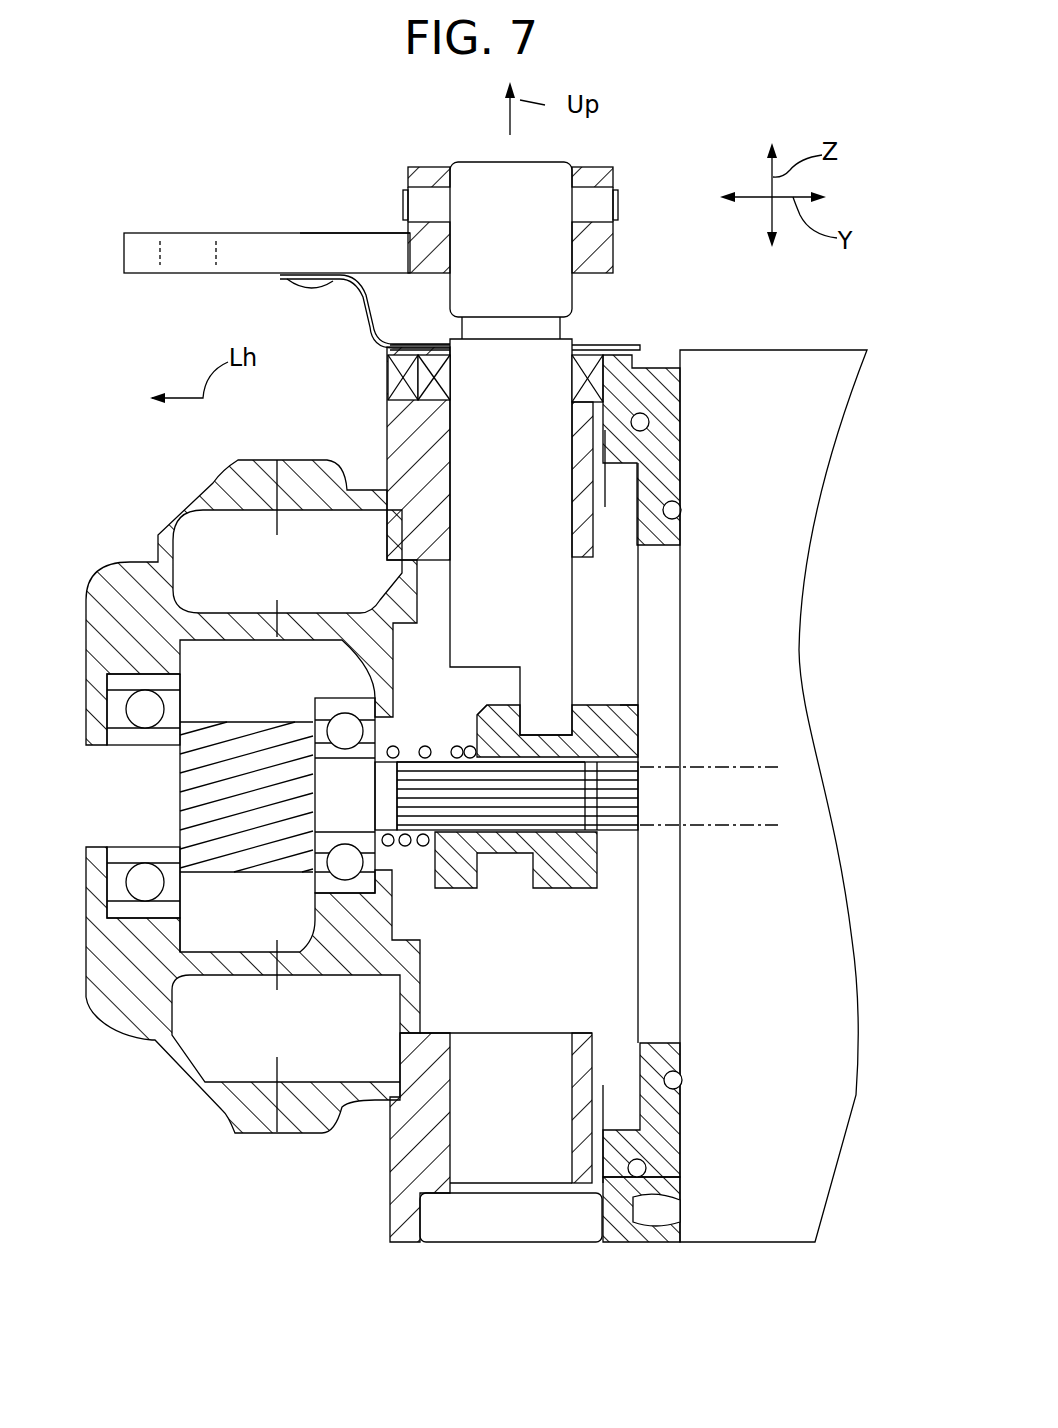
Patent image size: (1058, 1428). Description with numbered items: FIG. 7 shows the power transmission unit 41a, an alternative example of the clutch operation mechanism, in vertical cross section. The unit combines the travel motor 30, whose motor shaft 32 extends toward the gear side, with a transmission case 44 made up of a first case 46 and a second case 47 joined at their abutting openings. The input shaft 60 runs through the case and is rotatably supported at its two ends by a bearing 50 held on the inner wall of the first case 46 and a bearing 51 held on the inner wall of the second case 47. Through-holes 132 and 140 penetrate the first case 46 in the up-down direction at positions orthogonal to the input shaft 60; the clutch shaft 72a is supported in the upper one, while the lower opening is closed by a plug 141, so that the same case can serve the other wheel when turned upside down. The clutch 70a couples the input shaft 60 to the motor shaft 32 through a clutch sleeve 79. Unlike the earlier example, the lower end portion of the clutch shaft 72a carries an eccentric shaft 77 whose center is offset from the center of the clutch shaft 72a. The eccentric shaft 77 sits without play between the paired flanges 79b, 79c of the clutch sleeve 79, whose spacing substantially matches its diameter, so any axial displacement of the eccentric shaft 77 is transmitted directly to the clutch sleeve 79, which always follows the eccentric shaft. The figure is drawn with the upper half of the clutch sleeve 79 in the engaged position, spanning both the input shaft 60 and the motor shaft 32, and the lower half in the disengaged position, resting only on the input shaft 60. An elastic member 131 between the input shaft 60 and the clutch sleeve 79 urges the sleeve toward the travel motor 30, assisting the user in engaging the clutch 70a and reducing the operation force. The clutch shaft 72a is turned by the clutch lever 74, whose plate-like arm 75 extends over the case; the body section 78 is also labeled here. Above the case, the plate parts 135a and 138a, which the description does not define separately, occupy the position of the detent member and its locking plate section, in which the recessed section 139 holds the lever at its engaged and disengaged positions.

The left travel motor 30 is at (787, 377).
The motor shaft 32 is at (613, 800).
The power transmission unit 41a is at (696, 311).
The transmission case 44 is at (415, 1160).
The first case 46 is at (405, 1230).
The second case 47 is at (252, 1120).
The bearing 50 is at (345, 725).
The bearing 51 is at (147, 705).
The input shaft 60 is at (520, 806).
The clutch 70a is at (610, 694).
The clutch shaft 72a is at (540, 383).
The clutch lever 74 is at (249, 240).
The arm section 75 is at (310, 234).
The eccentric shaft 77 is at (577, 693).
The body section 78 is at (577, 597).
The clutch sleeve 79 is at (628, 728).
The flange 79b is at (470, 752).
The flange 79c is at (630, 705).
The elastic member 131 is at (430, 748).
The through-hole 132 is at (450, 442).
The nut 135a is at (367, 282).
The bracket 138a is at (330, 288).
The recessed section 139 is at (300, 284).
The through-hole 140 is at (450, 1133).
The seal plug 141 is at (535, 1225).